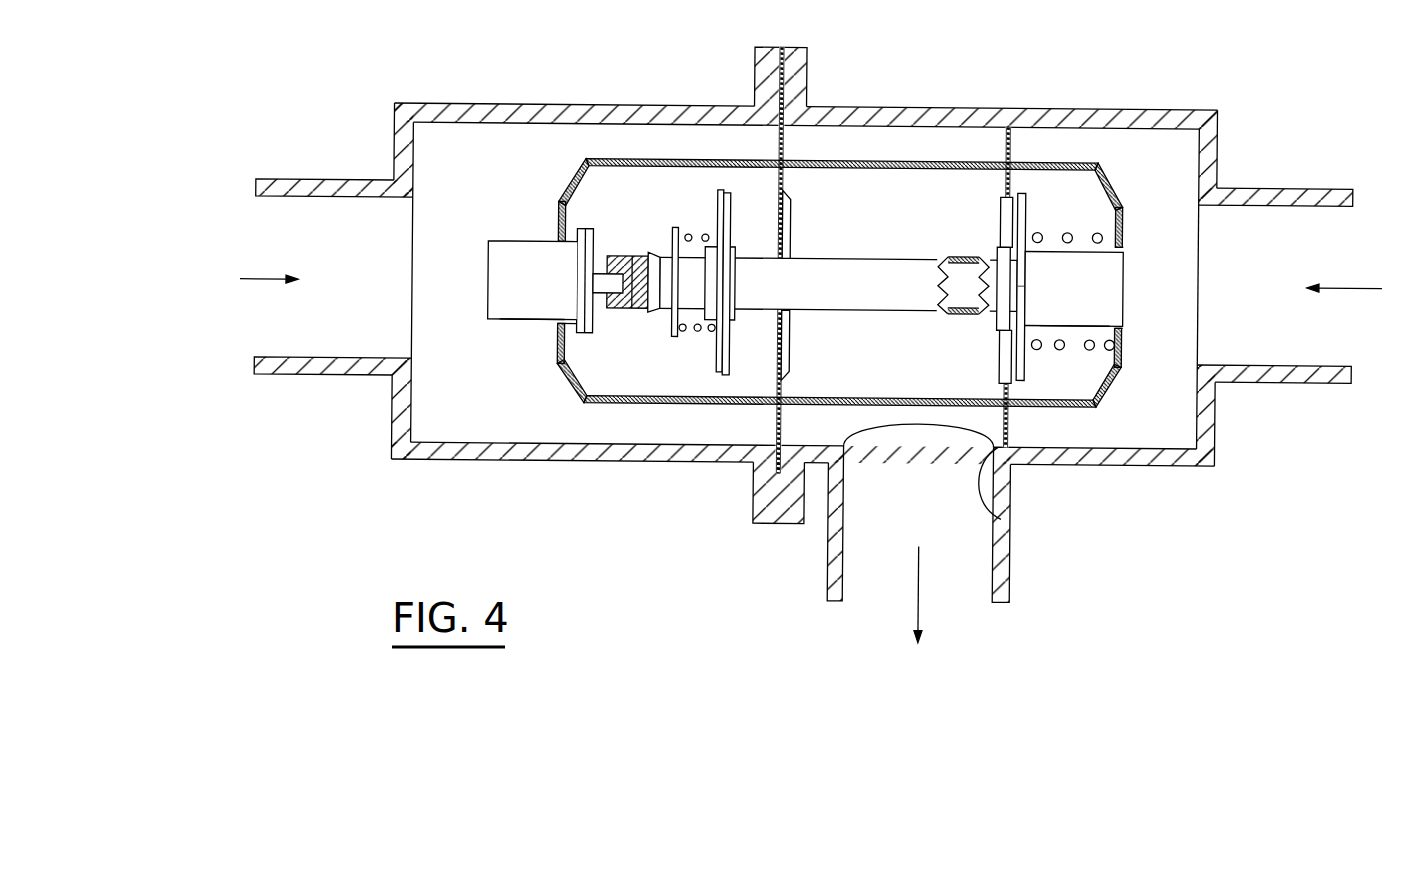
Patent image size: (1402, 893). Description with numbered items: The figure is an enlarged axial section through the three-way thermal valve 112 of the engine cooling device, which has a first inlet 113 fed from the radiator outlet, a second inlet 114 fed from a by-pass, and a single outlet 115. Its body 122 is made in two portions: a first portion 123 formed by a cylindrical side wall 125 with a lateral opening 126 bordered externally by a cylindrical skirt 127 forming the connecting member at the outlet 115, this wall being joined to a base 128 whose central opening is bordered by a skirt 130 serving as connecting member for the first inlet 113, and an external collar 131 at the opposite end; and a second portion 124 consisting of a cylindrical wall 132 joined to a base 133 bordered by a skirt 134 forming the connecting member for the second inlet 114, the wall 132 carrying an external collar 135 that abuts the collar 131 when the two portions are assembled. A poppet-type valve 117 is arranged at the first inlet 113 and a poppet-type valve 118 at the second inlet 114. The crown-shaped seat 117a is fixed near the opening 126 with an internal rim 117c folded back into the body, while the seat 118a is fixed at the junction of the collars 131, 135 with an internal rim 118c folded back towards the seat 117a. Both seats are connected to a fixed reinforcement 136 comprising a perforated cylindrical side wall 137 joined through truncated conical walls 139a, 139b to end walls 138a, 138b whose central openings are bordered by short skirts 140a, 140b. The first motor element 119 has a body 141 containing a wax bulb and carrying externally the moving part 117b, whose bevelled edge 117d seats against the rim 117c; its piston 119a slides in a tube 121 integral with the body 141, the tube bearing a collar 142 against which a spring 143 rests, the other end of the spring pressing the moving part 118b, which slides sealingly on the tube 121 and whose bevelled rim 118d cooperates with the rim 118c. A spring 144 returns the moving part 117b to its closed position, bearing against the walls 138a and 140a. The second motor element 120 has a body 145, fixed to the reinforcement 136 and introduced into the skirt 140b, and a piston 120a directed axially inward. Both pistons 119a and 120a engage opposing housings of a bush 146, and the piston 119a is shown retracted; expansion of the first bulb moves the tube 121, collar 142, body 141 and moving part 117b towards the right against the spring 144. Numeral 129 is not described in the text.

The three-way thermal valve 112 is at (811, 336).
The first inlet 113 is at (1230, 313).
The second inlet 114 is at (352, 248).
The outlet 115 is at (885, 526).
The poppet-type valve 117 is at (1015, 176).
The seat 117a is at (1003, 177).
The moving part 117b is at (1022, 376).
The internal rim 117c is at (1003, 193).
The edge 117d is at (1013, 377).
The poppet-type valve 118 is at (733, 104).
The seat 118a is at (787, 176).
The moving part 118b is at (721, 371).
The internal rim 118c is at (790, 373).
The bevelled rim 118d is at (749, 186).
The first motor element 119 is at (1092, 279).
The piston 119a is at (980, 283).
The second motor element 120 is at (488, 233).
The piston 120a is at (603, 276).
The tube 121 is at (892, 292).
The body 122 is at (812, 70).
The first portion 123 is at (870, 104).
The second portion 124 is at (487, 112).
The cylindrical side wall 125 is at (1180, 462).
The opening 126 is at (1003, 514).
The cylindrical skirt 127 is at (1005, 569).
The base 128 is at (1207, 424).
The right chamber 129 is at (1198, 350).
The skirt 130 is at (1298, 190).
The external collar 131 is at (793, 509).
The cylindrical wall 132 is at (505, 453).
The base 133 is at (398, 415).
The skirt 134 is at (307, 367).
The external collar 135 is at (763, 505).
The fixed reinforcement 136 is at (642, 146).
The perforated cylindrical side wall 137 is at (617, 406).
The wall 138a is at (1122, 222).
The wall 138b is at (557, 220).
The truncated conical wall 139a is at (1102, 176).
The truncated conical wall 139b is at (572, 186).
The short skirt 140a is at (1113, 227).
The short skirt 140b is at (570, 233).
The body 141 is at (1107, 301).
The collar 142 is at (673, 326).
The spring 143 is at (690, 231).
The spring 144 is at (1039, 226).
The body 145 is at (515, 302).
The bush 146 is at (640, 256).